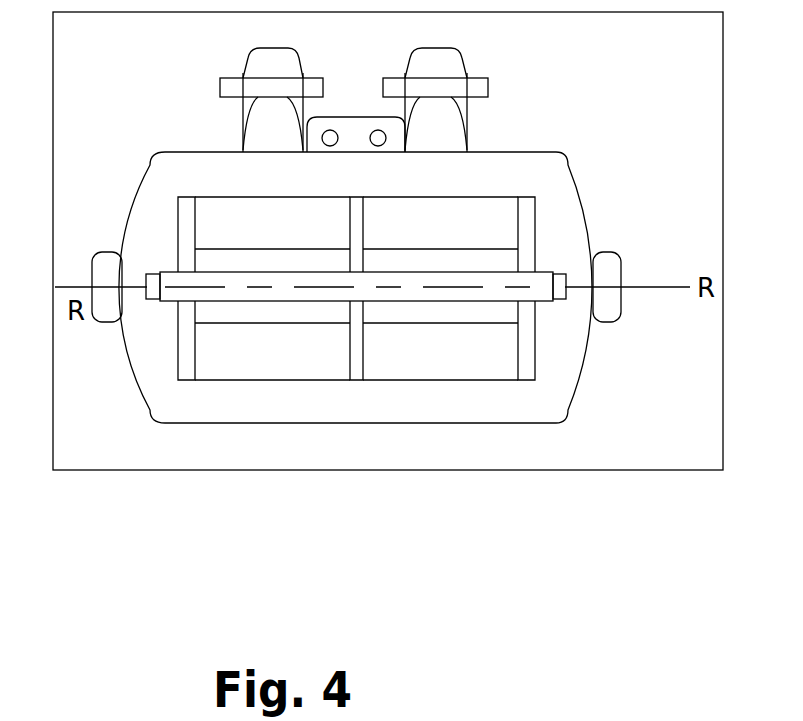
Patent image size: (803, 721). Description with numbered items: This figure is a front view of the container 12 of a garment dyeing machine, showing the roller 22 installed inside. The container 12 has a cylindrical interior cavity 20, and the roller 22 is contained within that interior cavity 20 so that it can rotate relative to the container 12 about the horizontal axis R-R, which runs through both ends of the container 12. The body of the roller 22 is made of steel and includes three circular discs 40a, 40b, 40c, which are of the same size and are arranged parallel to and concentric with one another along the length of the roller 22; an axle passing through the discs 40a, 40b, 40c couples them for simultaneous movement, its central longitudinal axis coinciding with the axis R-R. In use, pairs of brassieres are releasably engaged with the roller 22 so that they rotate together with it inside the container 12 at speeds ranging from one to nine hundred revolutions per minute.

The container 12 is at (513, 170).
The interior cavity 20 is at (493, 228).
The roller 22 is at (527, 357).
The circular disc 40a is at (187, 372).
The circular disc 40b is at (358, 372).
The circular disc 40c is at (530, 370).